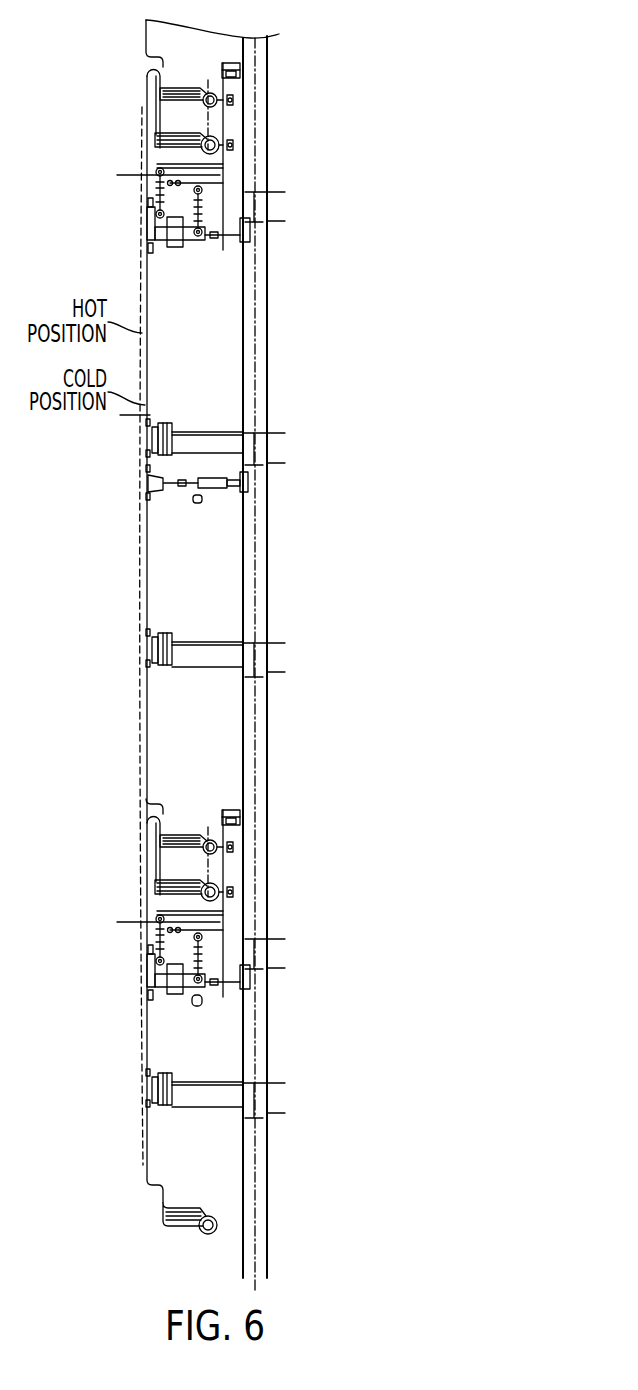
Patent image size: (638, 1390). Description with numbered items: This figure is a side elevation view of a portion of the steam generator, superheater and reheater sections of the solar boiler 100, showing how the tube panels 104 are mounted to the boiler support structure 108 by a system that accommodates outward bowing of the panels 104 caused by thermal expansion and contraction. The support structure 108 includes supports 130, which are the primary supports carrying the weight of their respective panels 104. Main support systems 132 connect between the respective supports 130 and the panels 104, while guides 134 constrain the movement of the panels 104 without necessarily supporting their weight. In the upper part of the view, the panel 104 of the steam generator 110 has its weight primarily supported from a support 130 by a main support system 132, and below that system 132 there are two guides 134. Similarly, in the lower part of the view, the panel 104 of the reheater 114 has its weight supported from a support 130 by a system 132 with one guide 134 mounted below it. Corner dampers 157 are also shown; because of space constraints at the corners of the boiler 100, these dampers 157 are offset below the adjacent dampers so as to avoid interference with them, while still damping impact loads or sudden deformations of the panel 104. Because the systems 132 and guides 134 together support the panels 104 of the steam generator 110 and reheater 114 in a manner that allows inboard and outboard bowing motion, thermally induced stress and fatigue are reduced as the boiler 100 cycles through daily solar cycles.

The boiler 100 is at (430, 82).
The panels 104 is at (159, 480).
The boiler support structure 108 is at (270, 343).
The steam generator 110 is at (147, 78).
The reheater 114 is at (147, 818).
The supports 130 is at (208, 185).
The main support systems 132 is at (133, 194).
The guides 134 is at (126, 443).
The corner dampers 157 is at (203, 499).